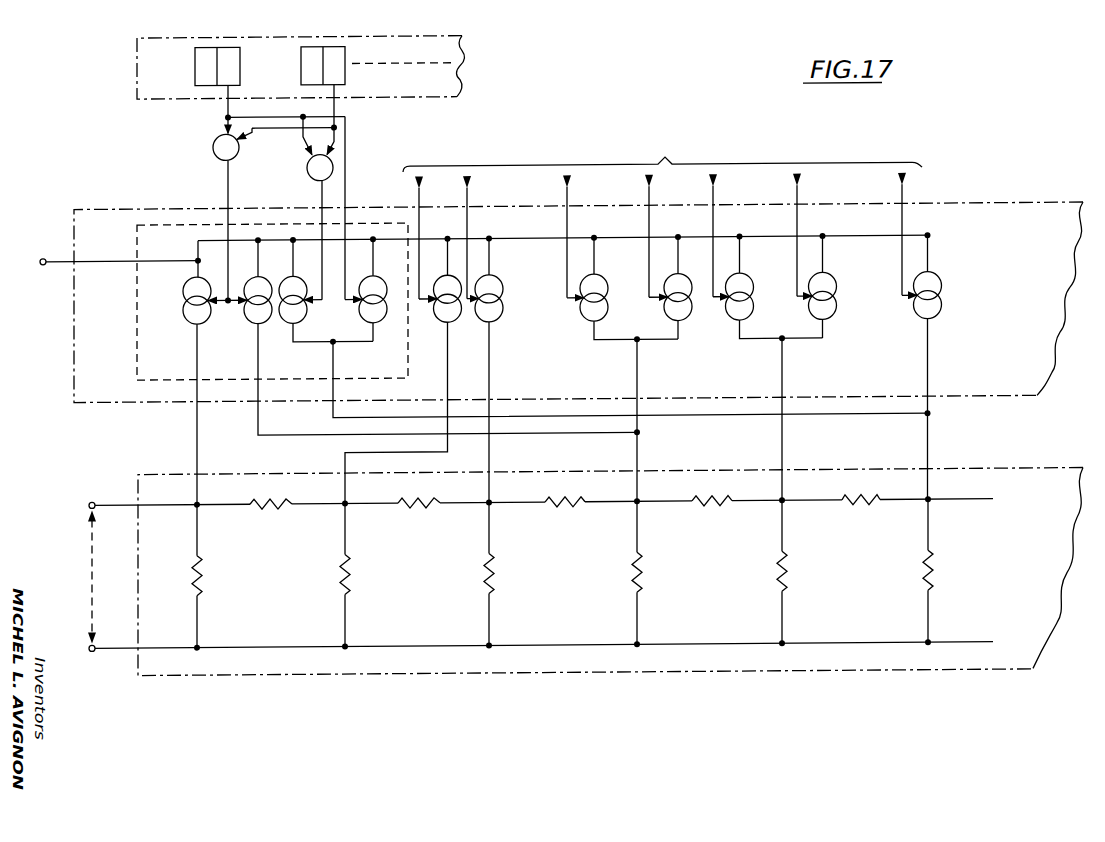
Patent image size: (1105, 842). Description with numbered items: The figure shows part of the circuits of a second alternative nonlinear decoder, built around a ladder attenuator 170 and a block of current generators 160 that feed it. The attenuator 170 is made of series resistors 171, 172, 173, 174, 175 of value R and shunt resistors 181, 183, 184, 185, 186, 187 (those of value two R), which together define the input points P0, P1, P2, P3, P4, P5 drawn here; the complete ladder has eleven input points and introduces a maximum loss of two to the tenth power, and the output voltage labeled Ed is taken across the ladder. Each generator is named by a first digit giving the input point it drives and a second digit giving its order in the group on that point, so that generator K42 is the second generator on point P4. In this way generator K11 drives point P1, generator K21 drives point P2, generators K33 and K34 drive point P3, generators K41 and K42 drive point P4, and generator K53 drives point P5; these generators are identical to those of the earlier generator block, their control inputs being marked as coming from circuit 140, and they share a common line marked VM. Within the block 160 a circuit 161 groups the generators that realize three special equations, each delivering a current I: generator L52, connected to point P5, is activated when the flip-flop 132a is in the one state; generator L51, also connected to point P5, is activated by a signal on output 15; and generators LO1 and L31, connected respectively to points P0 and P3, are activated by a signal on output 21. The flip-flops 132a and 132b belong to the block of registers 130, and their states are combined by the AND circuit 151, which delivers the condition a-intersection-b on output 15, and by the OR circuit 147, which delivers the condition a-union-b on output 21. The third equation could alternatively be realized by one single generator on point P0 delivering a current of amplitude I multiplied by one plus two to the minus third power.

The block of registers 130 is at (145, 45).
The flip-flop 132a is at (190, 68).
The flip-flop 132b is at (295, 68).
The OR circuit 147 is at (253, 123).
The AND circuit 151 is at (302, 135).
The output of the OR circuit 21 is at (230, 231).
The output of the AND circuit 15 is at (324, 208).
The block of generators 160 is at (103, 214).
The circuit of grouped generators 161 is at (150, 241).
The circuit 140 control inputs 140 is at (662, 215).
The ladder attenuator 170 is at (150, 664).
The resistor 171 is at (274, 494).
The resistor 172 is at (423, 493).
The resistor 173 is at (569, 492).
The resistor 174 is at (713, 489).
The resistor 175 is at (864, 489).
The resistor 181 is at (220, 577).
The resistor 183 is at (366, 576).
The resistor 184 is at (513, 575).
The resistor 185 is at (660, 574).
The resistor 186 is at (805, 573).
The resistor 187 is at (952, 572).
The input point P0 is at (178, 496).
The input point P1 is at (328, 495).
The input point P2 is at (473, 493).
The input point P3 is at (621, 492).
The input point P4 is at (766, 490).
The input point P5 is at (914, 489).
The generator LO1 is at (175, 391).
The generator L31 is at (427, 336).
The generator L51 is at (605, 326).
The generator L52 is at (349, 289).
The generator K11 is at (403, 370).
The generator K21 is at (507, 368).
The generator K33 is at (613, 368).
The generator K34 is at (654, 288).
The generator K41 is at (755, 367).
The generator K42 is at (797, 286).
The generator K53 is at (901, 366).
The reference voltage input VM is at (469, 252).
The output voltage Ed is at (73, 576).